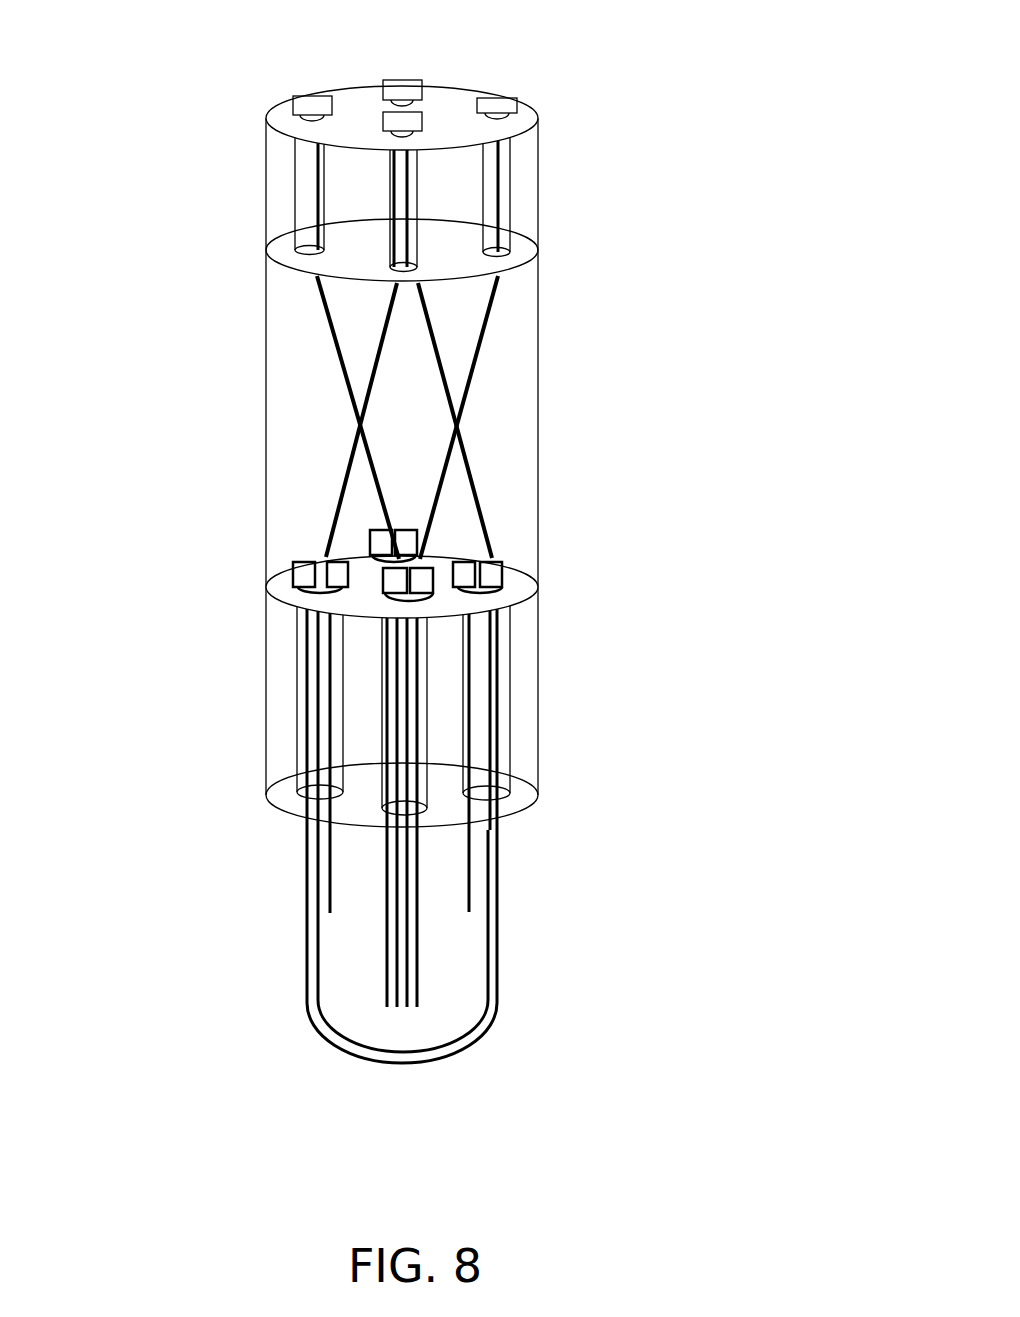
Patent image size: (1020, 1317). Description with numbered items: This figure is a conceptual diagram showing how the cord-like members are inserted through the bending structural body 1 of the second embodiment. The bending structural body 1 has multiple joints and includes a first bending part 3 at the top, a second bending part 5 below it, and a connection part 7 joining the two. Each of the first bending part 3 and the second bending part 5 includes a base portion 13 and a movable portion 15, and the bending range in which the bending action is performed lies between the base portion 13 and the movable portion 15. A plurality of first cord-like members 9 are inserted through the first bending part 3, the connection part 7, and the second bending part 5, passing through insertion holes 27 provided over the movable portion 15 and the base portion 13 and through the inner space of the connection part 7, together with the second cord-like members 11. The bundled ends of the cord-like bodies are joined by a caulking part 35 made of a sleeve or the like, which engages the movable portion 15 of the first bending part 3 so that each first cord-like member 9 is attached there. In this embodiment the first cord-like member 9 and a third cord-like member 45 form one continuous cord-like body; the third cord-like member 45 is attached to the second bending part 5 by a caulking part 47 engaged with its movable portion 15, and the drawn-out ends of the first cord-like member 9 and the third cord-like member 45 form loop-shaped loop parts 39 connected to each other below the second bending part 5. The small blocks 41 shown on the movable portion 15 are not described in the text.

The bending structural body 1 is at (475, 551).
The first bending part 3 is at (700, 147).
The second bending part 5 is at (541, 720).
The connection part 7 is at (543, 442).
The first cord-like members 9 is at (496, 284).
The second cord-like members 11 is at (308, 883).
The base portion 13 is at (266, 258).
The movable portion 15 is at (352, 84).
The insertion holes 27 is at (297, 212).
The caulking part 35 is at (300, 108).
The loop parts 39 is at (317, 1015).
The central sensor blocks 41 is at (340, 548).
The third cord-like members 45 is at (307, 740).
The caulking part 47 is at (292, 568).